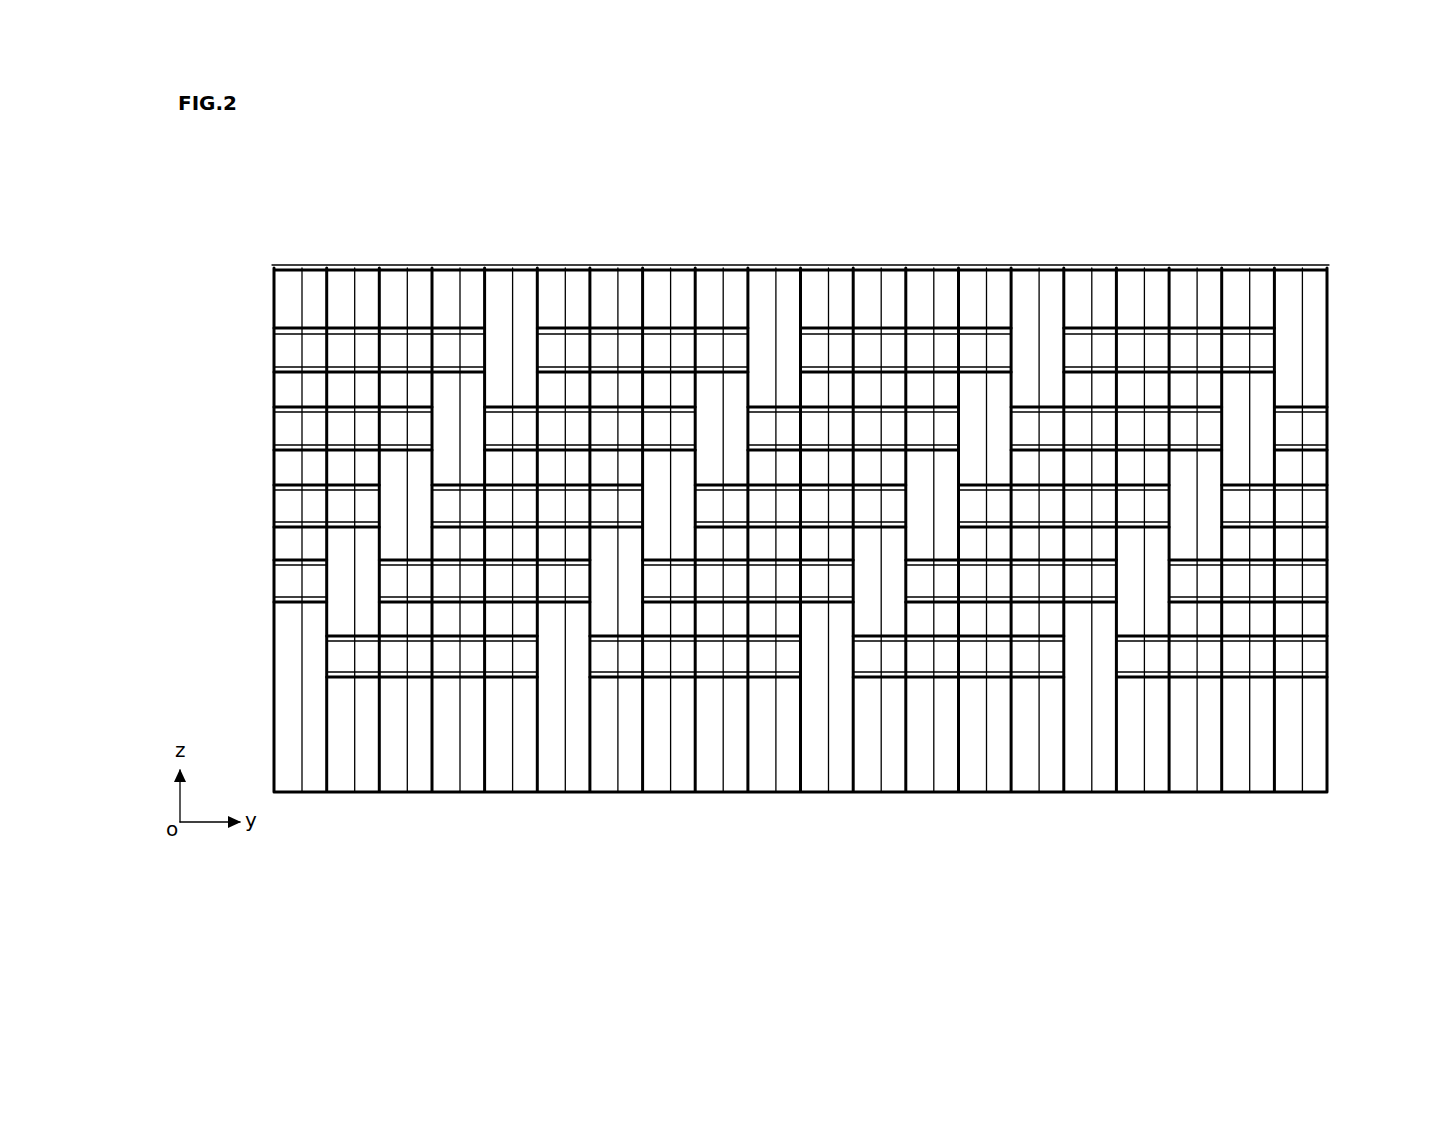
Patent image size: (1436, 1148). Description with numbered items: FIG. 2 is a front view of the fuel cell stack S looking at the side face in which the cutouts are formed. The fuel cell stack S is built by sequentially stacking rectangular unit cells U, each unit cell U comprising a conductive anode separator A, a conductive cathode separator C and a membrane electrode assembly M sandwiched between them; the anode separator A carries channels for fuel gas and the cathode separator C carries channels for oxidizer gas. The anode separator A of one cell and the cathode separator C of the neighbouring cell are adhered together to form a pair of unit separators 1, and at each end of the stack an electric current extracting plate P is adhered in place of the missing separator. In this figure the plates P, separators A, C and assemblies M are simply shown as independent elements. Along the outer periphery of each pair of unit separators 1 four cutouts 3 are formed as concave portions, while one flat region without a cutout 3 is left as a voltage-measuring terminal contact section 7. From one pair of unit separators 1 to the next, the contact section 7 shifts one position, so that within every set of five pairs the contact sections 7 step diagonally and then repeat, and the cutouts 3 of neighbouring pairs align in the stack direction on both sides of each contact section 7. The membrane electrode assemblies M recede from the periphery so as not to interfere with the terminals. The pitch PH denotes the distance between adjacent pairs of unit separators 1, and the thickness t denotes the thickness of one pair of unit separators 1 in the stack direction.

The pair of unit separators 1 is at (290, 262).
The cutout 3 is at (342, 348).
The voltage-measuring terminal contact section 7 is at (500, 352).
The fuel cell stack S is at (256, 264).
The membrane electrode assembly M is at (327, 793).
The electric current extracting plate P is at (288, 793).
The anode separator A is at (945, 782).
The cathode separator C is at (978, 785).
The unit cell U is at (975, 852).
The pitch PH is at (1092, 832).
The thickness t is at (1137, 235).